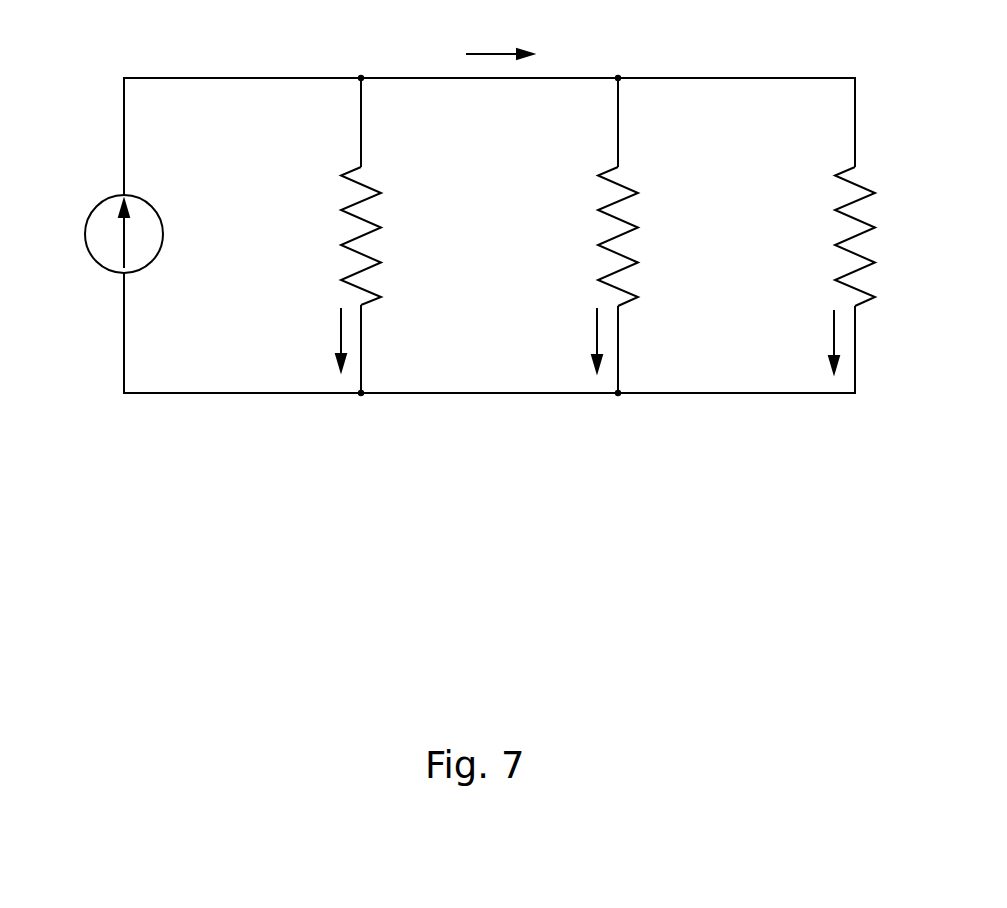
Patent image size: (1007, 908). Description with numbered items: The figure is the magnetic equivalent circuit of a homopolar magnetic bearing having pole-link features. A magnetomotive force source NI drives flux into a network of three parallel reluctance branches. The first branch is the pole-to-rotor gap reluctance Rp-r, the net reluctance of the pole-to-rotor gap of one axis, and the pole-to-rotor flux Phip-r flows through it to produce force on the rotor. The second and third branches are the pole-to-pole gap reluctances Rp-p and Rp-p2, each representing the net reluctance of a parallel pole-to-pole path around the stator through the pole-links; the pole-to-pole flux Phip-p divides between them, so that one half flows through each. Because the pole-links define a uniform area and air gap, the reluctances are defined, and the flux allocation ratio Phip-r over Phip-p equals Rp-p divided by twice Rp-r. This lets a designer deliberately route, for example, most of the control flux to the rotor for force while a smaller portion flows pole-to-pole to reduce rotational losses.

The magnetomotive force source NI is at (107, 234).
The pole-to-rotor gap reluctance Rp-r is at (327, 236).
The pole-to-pole gap reluctance Rp-p is at (573, 236).
The pole-to-pole reluctance Rp-p2 is at (810, 236).
The pole-to-rotor magnetic flux Phip-r is at (306, 339).
The pole-to-pole magnetic flux Phip-p is at (653, 190).